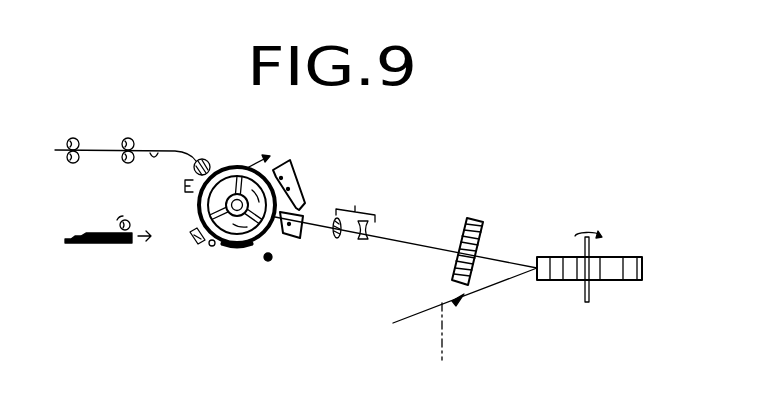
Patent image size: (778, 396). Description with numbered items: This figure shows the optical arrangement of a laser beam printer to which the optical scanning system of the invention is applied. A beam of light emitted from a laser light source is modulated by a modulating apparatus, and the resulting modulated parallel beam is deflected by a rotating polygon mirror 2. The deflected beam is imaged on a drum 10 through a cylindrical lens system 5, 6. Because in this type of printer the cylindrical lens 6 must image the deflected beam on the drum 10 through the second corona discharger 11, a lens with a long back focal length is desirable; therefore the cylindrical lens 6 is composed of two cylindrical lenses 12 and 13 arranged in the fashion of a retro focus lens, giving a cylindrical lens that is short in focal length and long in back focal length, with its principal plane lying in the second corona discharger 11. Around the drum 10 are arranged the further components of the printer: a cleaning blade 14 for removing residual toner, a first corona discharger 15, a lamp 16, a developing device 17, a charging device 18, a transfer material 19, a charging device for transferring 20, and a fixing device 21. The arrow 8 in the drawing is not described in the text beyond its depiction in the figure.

The rotating polygon mirror 2 is at (619, 257).
The cylindrical lens 5 is at (478, 220).
The cylindrical lens 6 is at (355, 202).
The feed direction arrow 8 is at (198, 213).
The drum 10 is at (222, 165).
The second corona discharger 11 is at (288, 238).
The cylindrical lens 12 is at (363, 240).
The cylindrical lens 13 is at (337, 240).
The cleaning blade 14 is at (256, 163).
The first corona discharger 15 is at (293, 172).
The lamp 16 is at (270, 260).
The developing device 17 is at (240, 252).
The charging device 18 is at (199, 245).
The transfer material 19 is at (57, 150).
The charging device for transferring 20 is at (184, 184).
The fixing device 21 is at (157, 153).